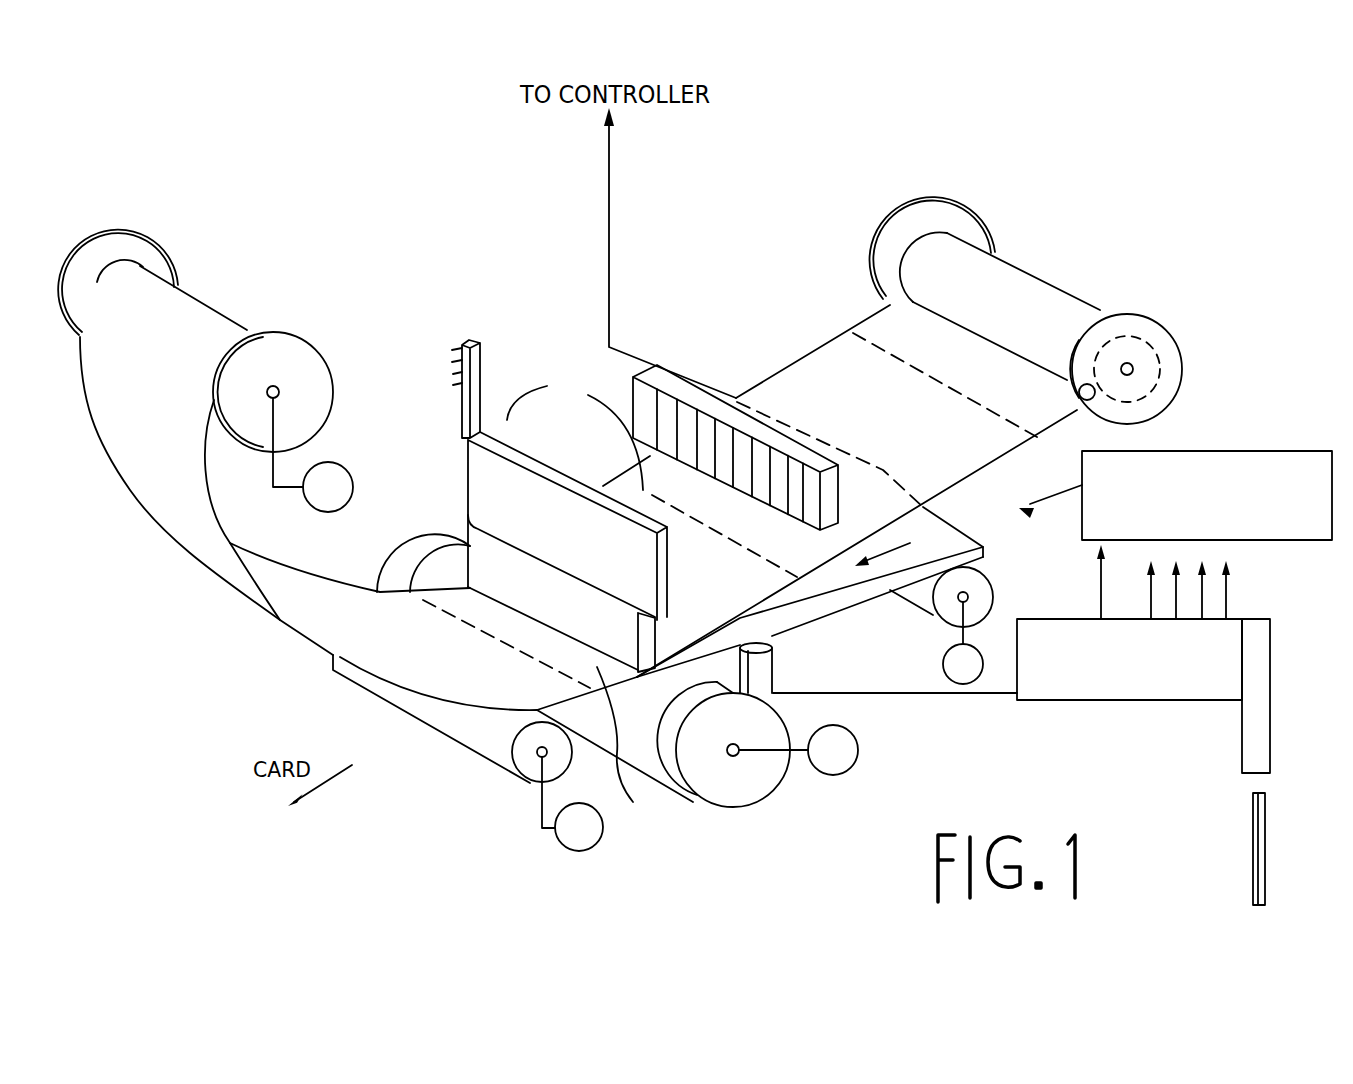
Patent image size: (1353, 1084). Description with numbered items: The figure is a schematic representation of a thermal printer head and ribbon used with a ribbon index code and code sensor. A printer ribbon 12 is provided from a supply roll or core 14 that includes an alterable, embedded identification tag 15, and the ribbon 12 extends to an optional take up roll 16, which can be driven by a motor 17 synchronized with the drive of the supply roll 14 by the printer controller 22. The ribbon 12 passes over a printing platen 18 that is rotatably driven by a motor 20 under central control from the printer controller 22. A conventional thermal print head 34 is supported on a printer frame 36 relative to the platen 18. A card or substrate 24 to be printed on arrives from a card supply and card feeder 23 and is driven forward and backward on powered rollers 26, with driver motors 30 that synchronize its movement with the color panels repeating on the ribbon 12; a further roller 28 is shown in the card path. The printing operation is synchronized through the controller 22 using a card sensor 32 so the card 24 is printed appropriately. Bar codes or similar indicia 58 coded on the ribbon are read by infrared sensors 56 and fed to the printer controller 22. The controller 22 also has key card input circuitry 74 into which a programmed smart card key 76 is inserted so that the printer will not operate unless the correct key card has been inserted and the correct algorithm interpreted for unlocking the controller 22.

The printer ribbon 12 is at (630, 800).
The supply roll or core 14 is at (1155, 322).
The identification tag 15 is at (1093, 388).
The take up roll 16 is at (276, 345).
The motor 17 is at (323, 512).
The printing platen 18 is at (760, 777).
The motor 20 is at (851, 733).
The printer controller 22 is at (1069, 693).
The card supply and card feeder 23 is at (1275, 531).
The card or substrate 24 is at (862, 580).
The rollers 26 is at (994, 598).
The card feed roller 28 is at (478, 733).
The driver motors 30 is at (581, 851).
The card sensor 32 is at (772, 659).
The thermal print head 34 is at (490, 490).
The printer frame 36 is at (446, 345).
The infrared sensors 56 is at (745, 472).
The bar codes or similar indicia 58 is at (966, 366).
The key card input circuitry 74 is at (1257, 656).
The smart card key 76 is at (1253, 823).